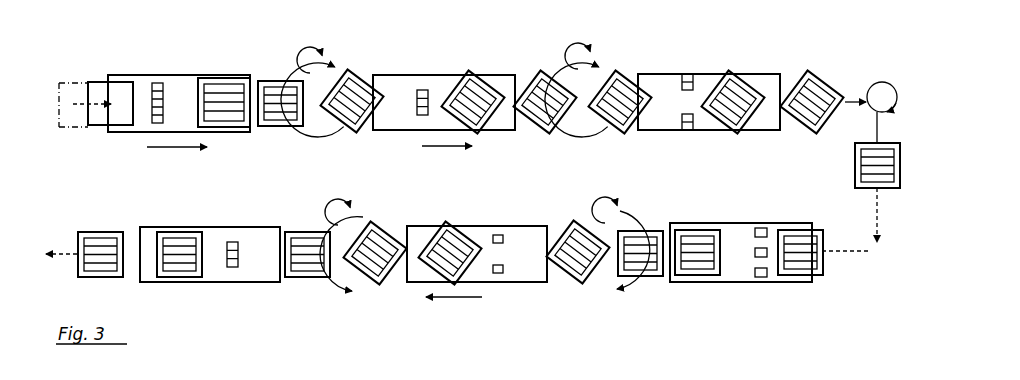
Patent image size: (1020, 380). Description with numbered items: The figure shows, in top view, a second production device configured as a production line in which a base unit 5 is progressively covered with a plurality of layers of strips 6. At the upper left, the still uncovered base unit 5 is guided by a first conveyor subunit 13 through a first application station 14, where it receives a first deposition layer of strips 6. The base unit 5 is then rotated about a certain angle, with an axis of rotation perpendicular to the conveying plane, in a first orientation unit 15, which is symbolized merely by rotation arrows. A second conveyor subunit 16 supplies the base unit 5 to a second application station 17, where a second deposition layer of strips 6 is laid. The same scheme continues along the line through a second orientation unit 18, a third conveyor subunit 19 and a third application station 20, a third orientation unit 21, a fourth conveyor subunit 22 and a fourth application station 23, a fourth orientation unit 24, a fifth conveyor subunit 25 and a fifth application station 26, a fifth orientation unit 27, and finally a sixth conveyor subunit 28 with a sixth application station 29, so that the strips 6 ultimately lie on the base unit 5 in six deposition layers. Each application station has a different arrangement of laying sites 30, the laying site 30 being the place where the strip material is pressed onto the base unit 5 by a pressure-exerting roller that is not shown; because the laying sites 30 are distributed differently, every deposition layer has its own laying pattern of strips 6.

The base unit 5 is at (102, 88).
The strips 6 is at (222, 97).
The first conveyor subunit 13 is at (170, 80).
The first application station 14 is at (159, 126).
The first orientation unit 15 is at (308, 151).
The second conveyor subunit 16 is at (440, 85).
The second application station 17 is at (421, 121).
The second orientation unit 18 is at (586, 152).
The third conveyor subunit 19 is at (703, 85).
The third application station 20 is at (688, 136).
The third orientation unit 21 is at (869, 79).
The fourth conveyor subunit 22 is at (738, 268).
The fourth application station 23 is at (762, 289).
The fourth orientation unit 24 is at (607, 299).
The fifth conveyor subunit 25 is at (518, 272).
The fifth application station 26 is at (500, 289).
The fifth orientation unit 27 is at (356, 303).
The sixth conveyor subunit 28 is at (258, 276).
The sixth application station 29 is at (231, 271).
The laying site 30 is at (163, 110).